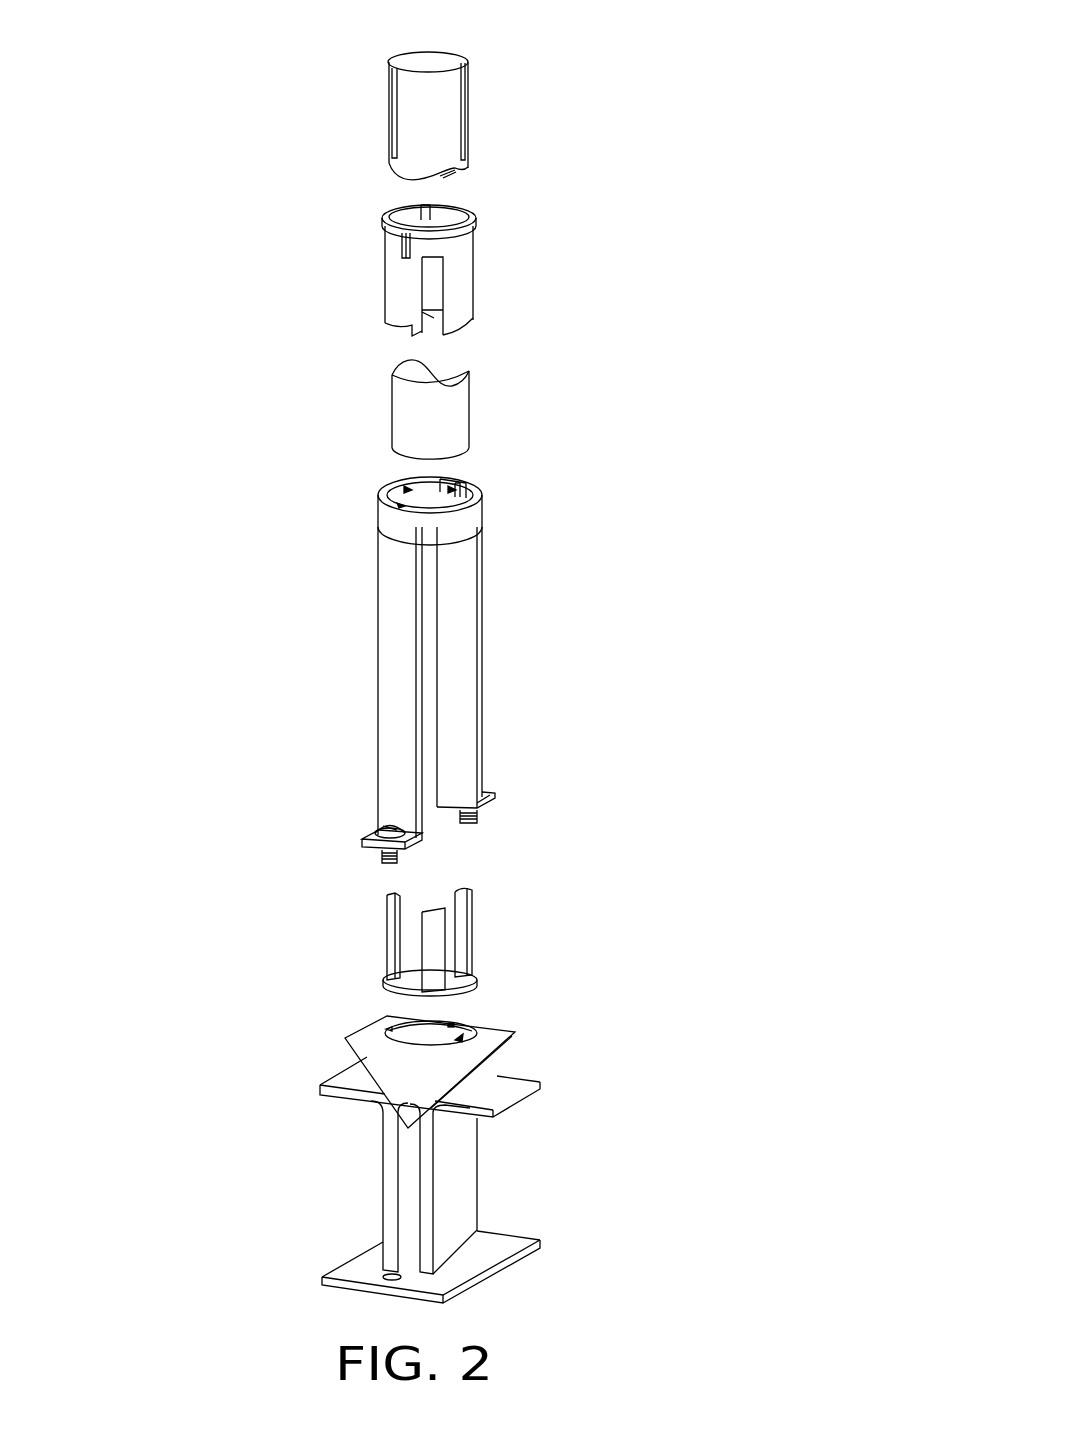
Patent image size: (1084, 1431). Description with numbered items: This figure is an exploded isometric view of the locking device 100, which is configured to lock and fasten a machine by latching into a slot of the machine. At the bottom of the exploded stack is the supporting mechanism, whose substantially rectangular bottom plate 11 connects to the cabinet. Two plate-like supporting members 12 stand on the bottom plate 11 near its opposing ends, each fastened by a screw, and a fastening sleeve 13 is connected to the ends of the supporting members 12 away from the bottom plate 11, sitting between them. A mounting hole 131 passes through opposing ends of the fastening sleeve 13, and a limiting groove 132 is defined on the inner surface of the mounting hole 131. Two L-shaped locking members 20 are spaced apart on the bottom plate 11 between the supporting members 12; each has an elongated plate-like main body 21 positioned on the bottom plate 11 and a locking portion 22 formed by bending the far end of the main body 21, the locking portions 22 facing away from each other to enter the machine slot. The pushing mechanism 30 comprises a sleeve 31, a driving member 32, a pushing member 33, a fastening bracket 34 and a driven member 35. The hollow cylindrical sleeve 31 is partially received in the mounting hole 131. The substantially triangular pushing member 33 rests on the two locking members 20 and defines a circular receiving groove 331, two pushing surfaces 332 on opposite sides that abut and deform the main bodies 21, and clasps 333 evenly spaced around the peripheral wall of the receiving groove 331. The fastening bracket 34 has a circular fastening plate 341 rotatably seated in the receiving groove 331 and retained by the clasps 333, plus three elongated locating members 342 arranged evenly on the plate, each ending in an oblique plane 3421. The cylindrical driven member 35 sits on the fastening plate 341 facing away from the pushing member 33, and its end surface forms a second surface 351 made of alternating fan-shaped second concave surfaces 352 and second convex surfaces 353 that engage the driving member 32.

The locking device 100 is at (397, 37).
The bottom plate 11 is at (355, 1267).
The supporting member 12 is at (457, 620).
The fastening sleeve 13 is at (387, 507).
The mounting hole 131 is at (418, 483).
The limiting groove 132 is at (445, 485).
The locking member 20 is at (385, 1165).
The main body 21 is at (388, 1178).
The locking portion 22 is at (348, 1095).
The pushing mechanism 30 is at (620, 271).
The sleeve 31 is at (462, 275).
The driving member 32 is at (445, 152).
The pushing member 33 is at (495, 1055).
The receiving groove 331 is at (462, 1036).
The pushing surface 332 is at (478, 1062).
The clasp 333 is at (452, 1025).
The fastening bracket 34 is at (514, 931).
The fastening plate 341 is at (455, 982).
The locating member 342 is at (489, 929).
The oblique plane 3421 is at (457, 890).
The driven member 35 is at (440, 398).
The second surface 351 is at (350, 364).
The second concave surface 352 is at (455, 371).
The second convex surface 353 is at (448, 372).